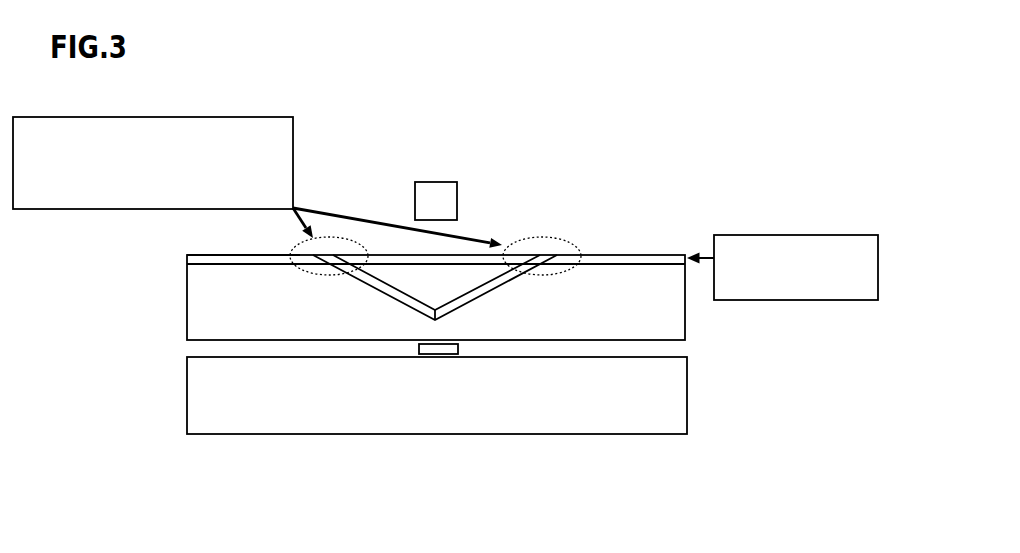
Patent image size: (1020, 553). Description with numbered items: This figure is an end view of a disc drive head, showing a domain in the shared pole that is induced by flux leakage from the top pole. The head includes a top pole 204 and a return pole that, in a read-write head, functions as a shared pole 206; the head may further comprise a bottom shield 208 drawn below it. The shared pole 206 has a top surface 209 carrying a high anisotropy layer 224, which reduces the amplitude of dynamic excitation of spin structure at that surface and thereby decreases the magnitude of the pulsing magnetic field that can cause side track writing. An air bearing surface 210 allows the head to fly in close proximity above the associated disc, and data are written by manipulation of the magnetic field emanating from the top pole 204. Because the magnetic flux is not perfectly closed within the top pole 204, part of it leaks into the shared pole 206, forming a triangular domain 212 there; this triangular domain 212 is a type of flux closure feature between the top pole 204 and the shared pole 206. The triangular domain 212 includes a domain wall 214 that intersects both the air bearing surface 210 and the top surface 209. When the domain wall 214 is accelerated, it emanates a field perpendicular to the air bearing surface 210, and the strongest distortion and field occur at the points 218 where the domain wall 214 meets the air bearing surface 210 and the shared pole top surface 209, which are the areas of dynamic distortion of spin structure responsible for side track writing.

The top pole 204 is at (469, 198).
The shared pole 206 is at (699, 320).
The bottom shield 208 is at (699, 394).
The top surface of the shared pole 209 is at (235, 255).
The air bearing surface 210 is at (602, 316).
The triangular domain 212 is at (482, 290).
The domain wall 214 is at (367, 296).
The intersection points 218 is at (323, 255).
The high anisotropy layer 224 is at (641, 259).